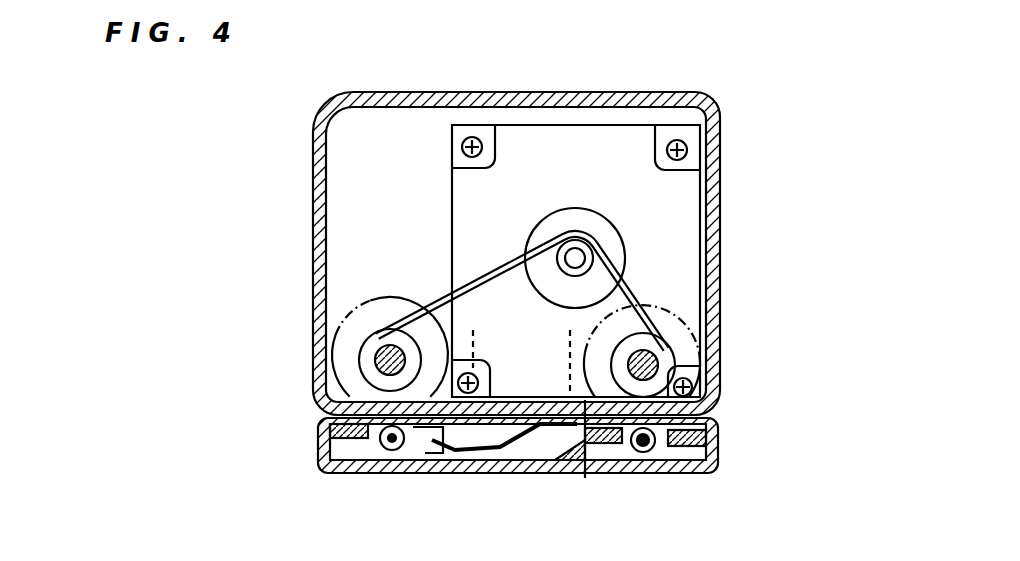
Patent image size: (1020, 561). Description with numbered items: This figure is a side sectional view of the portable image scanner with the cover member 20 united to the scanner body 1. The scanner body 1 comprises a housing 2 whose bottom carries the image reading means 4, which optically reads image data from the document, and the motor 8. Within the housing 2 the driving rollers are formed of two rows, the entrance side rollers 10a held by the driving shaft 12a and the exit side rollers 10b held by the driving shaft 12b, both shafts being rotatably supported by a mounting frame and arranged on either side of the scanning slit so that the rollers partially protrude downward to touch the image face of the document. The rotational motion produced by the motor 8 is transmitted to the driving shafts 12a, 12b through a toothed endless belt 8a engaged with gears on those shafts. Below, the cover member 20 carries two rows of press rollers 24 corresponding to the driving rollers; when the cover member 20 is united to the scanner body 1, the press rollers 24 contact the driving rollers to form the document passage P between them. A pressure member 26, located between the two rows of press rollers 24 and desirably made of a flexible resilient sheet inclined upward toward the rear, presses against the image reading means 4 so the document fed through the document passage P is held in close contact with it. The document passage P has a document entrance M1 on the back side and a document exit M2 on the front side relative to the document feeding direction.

The scanner body 1 is at (598, 90).
The housing 2 is at (718, 132).
The image reading means 4 is at (586, 478).
The motor 8 is at (670, 216).
The toothed endless belt 8a is at (478, 270).
The entrance side rollers 10a is at (355, 300).
The exit side rollers 10b is at (700, 292).
The driving shaft 12a is at (376, 361).
The driving shaft 12b is at (654, 362).
The cover member 20 is at (712, 472).
The press rollers 24 is at (380, 452).
The pressure member 26 is at (518, 450).
The document entrance M1 is at (318, 417).
The document exit M2 is at (716, 428).
The document passage P is at (446, 450).